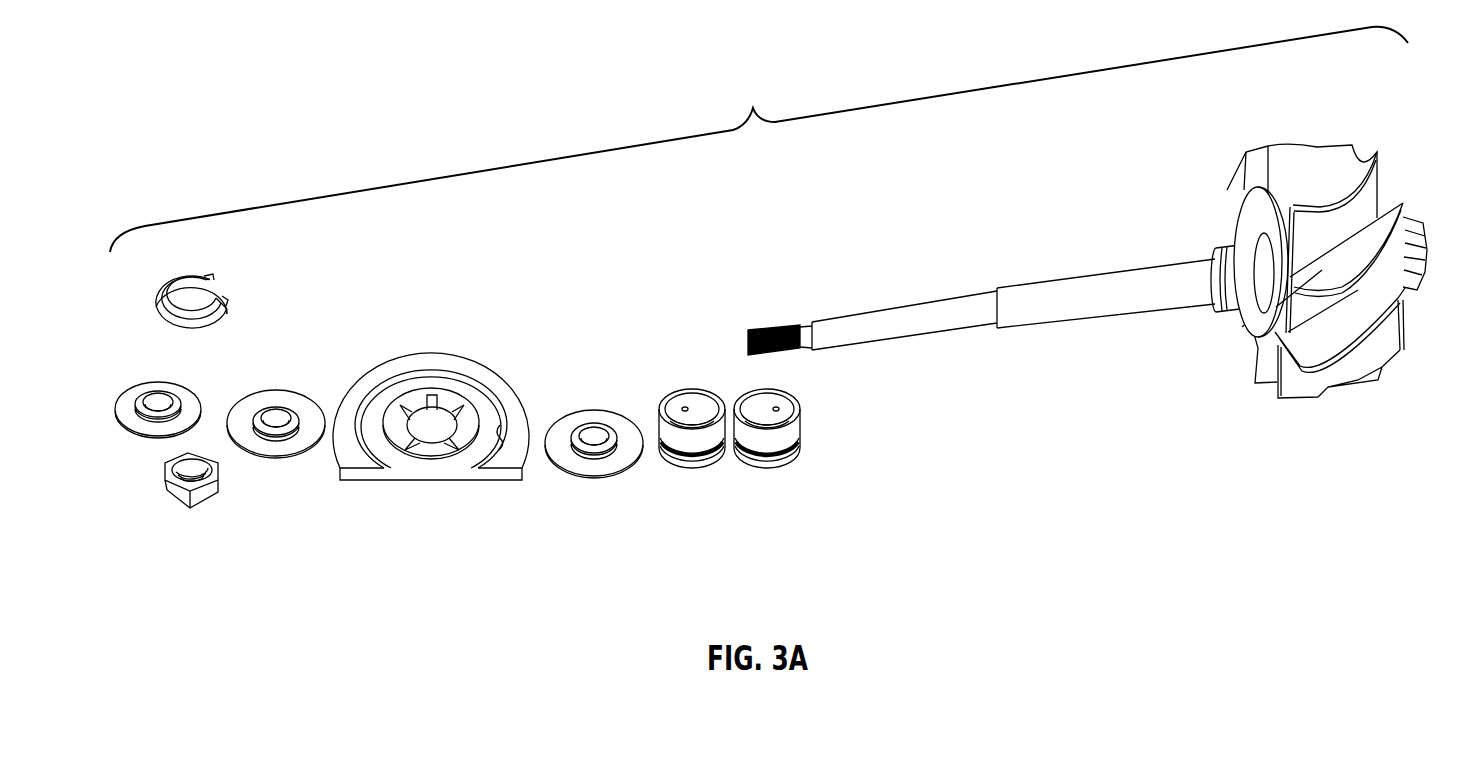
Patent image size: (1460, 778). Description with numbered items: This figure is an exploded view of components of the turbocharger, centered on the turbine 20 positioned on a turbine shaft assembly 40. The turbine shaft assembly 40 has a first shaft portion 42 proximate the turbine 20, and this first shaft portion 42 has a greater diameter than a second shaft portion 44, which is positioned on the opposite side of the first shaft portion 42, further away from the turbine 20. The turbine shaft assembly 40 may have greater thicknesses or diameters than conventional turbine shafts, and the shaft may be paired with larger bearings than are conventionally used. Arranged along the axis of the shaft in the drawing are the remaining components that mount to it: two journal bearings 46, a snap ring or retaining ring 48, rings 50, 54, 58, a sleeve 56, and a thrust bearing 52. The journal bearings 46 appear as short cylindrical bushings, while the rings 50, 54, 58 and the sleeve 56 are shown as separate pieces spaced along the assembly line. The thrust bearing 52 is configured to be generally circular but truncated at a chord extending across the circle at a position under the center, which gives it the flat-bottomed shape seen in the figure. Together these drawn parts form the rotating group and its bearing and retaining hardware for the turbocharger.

The turbine 20 is at (1313, 175).
The turbine shaft assembly 40 is at (994, 343).
The first shaft portion 42 is at (1030, 305).
The second shaft portion 44 is at (873, 323).
The journal bearings 46 is at (682, 450).
The snap rings or retaining rings 48 is at (228, 305).
The ring 50 is at (590, 468).
The thrust bearing 52 is at (420, 443).
The ring 54 is at (287, 442).
The sleeve 56 is at (190, 478).
The ring 58 is at (116, 428).